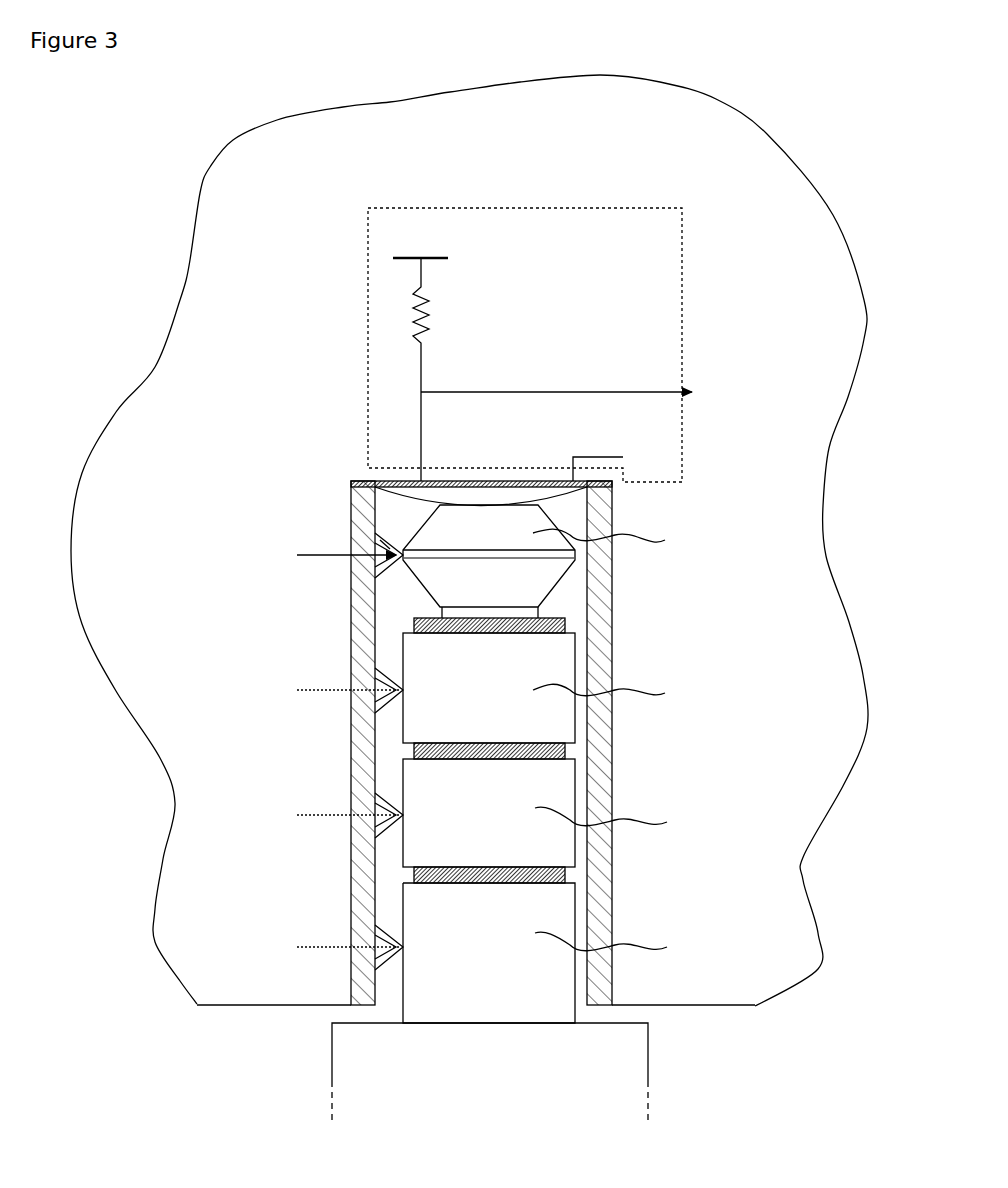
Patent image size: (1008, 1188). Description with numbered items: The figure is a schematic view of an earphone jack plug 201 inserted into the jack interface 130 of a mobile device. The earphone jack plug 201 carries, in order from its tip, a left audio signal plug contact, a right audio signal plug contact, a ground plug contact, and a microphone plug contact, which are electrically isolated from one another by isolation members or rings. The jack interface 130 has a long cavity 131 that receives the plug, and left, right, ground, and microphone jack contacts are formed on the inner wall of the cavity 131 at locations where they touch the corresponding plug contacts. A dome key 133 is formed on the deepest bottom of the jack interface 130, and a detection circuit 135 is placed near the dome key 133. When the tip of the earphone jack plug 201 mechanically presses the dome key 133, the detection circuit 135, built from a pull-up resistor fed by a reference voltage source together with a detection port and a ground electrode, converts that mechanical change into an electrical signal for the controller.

The jack interface 130 is at (298, 208).
The cavity 131 is at (620, 612).
The dome key 133 is at (351, 490).
The detection circuit 135 is at (583, 208).
The earphone jack plug 201 is at (444, 1036).